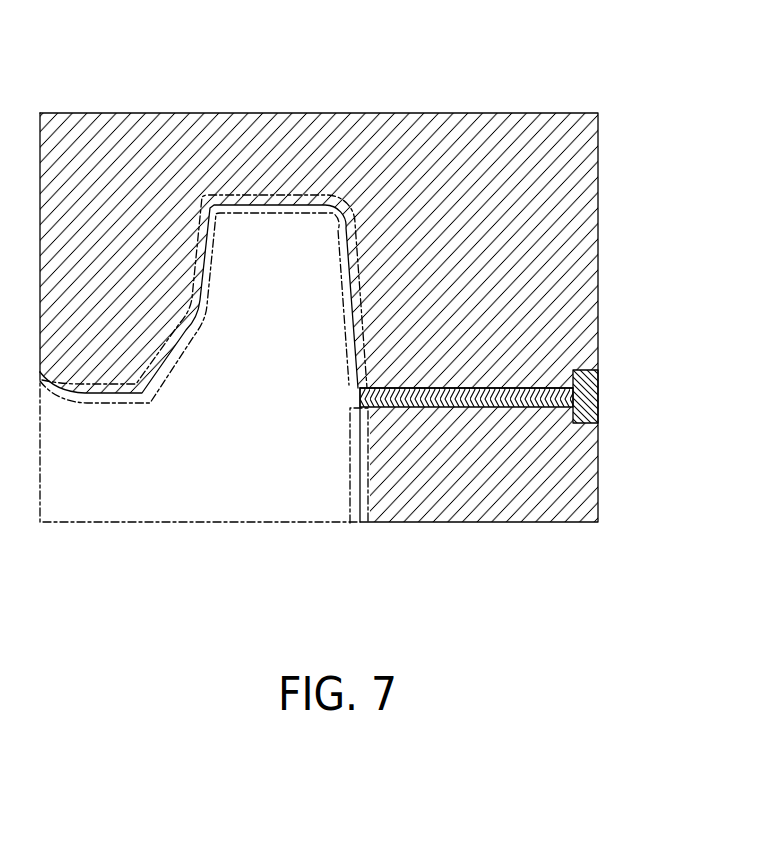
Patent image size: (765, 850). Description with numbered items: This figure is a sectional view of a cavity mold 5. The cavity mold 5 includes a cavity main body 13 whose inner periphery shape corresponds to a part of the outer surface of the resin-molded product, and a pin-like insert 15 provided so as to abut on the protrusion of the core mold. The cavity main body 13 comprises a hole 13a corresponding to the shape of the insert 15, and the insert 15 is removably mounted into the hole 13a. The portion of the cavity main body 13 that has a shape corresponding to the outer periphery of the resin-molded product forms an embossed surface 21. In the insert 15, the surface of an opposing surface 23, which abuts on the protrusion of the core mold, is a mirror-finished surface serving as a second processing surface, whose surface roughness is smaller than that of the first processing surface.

The cavity mold 5 is at (283, 75).
The cavity main body 13 is at (575, 168).
The hole 13a is at (475, 366).
The pin-like insert 15 is at (600, 396).
The embossed surface 21 is at (115, 404).
The opposing surface 23 is at (356, 397).